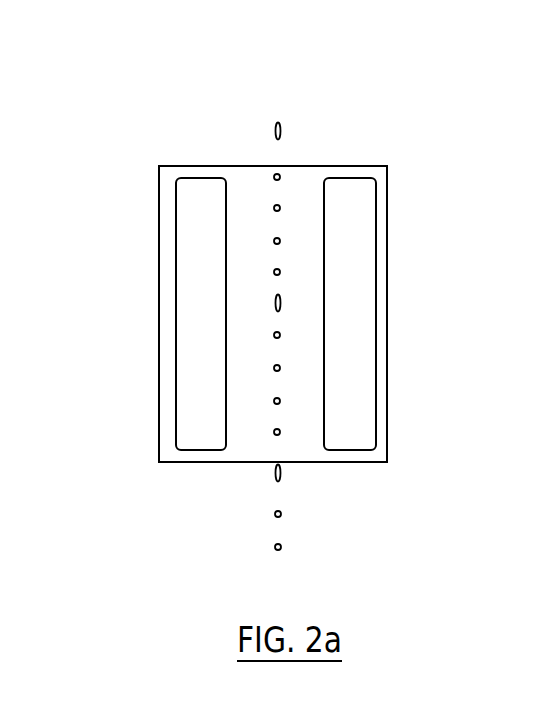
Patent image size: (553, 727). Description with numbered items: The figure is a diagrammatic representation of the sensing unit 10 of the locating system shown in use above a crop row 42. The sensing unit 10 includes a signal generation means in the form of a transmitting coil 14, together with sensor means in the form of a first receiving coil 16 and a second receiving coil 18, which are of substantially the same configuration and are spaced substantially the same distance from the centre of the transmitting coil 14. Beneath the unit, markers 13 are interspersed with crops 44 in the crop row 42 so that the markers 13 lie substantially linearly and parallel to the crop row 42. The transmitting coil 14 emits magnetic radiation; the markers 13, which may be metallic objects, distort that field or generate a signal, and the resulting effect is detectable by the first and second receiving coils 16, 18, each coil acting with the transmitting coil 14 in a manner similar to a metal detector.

The sensing unit 10 is at (383, 82).
The markers 13 is at (273, 130).
The transmitting coil 14 is at (292, 462).
The first receiving coil 16 is at (178, 180).
The second receiving coil 18 is at (387, 167).
The crop row 42 is at (286, 513).
The crops 44 is at (280, 205).